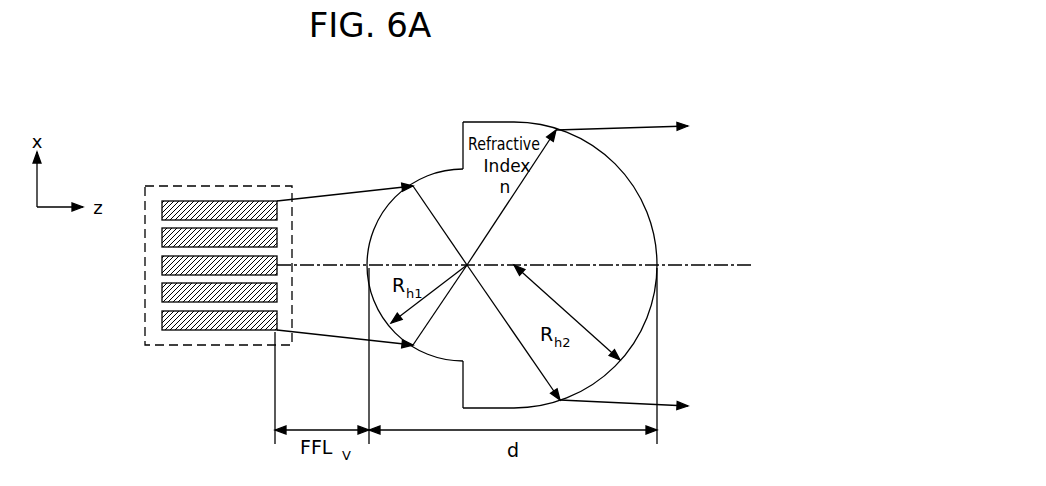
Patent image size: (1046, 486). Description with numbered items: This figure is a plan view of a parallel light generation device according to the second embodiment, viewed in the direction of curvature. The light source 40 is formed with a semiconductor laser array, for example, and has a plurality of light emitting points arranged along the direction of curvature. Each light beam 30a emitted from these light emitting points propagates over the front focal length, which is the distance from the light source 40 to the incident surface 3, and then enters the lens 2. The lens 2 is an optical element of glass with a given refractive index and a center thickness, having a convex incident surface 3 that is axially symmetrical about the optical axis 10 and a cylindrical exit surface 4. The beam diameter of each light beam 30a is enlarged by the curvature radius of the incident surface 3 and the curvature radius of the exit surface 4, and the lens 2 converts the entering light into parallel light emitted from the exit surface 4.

The lens 2 is at (529, 233).
The incident surface 3 is at (430, 172).
The exit surface 4 is at (628, 180).
The optical axis 10 is at (723, 265).
The light beam 30a is at (330, 194).
The light source 40 is at (215, 186).